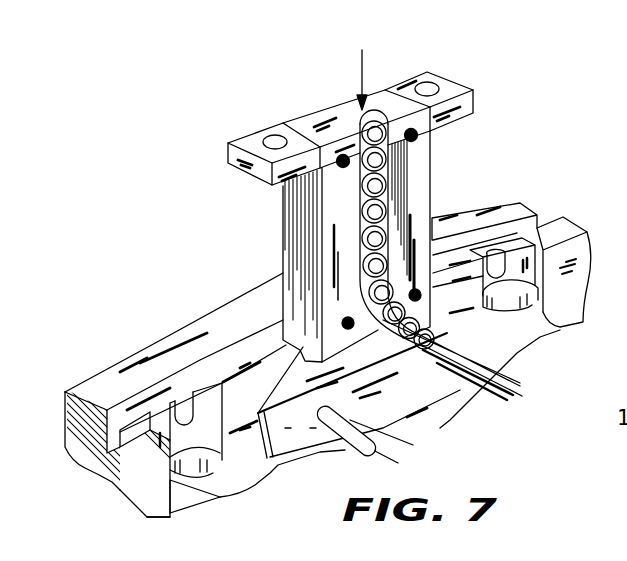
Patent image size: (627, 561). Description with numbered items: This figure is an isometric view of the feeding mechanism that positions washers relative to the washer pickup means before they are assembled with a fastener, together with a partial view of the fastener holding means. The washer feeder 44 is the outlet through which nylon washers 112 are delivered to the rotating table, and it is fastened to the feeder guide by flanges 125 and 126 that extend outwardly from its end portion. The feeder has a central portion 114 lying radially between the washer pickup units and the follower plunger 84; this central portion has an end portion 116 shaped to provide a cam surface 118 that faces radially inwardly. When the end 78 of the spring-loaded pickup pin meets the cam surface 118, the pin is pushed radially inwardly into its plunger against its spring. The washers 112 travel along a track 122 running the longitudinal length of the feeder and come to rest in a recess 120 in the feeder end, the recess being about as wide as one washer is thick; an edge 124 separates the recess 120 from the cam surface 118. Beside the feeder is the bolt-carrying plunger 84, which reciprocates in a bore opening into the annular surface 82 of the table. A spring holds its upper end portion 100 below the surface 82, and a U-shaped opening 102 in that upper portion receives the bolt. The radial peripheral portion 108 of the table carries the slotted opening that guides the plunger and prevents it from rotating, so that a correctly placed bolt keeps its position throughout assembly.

The washer feeder outlet 44 is at (410, 62).
The pin end portion 78 is at (374, 452).
The annular surface 82 is at (563, 227).
The plunger 84 is at (157, 512).
The upper end portion 100 is at (123, 487).
The U-shaped opening 102 is at (492, 268).
The radial peripheral portion 108 is at (82, 455).
The washer 112 is at (362, 118).
The central portion 114 is at (428, 177).
The end portion 116 is at (285, 390).
The cam surface 118 is at (350, 395).
The recess 120 is at (455, 388).
The track 122 is at (358, 124).
The edge 124 is at (425, 356).
The flange 125 is at (230, 168).
The flange 126 is at (450, 88).